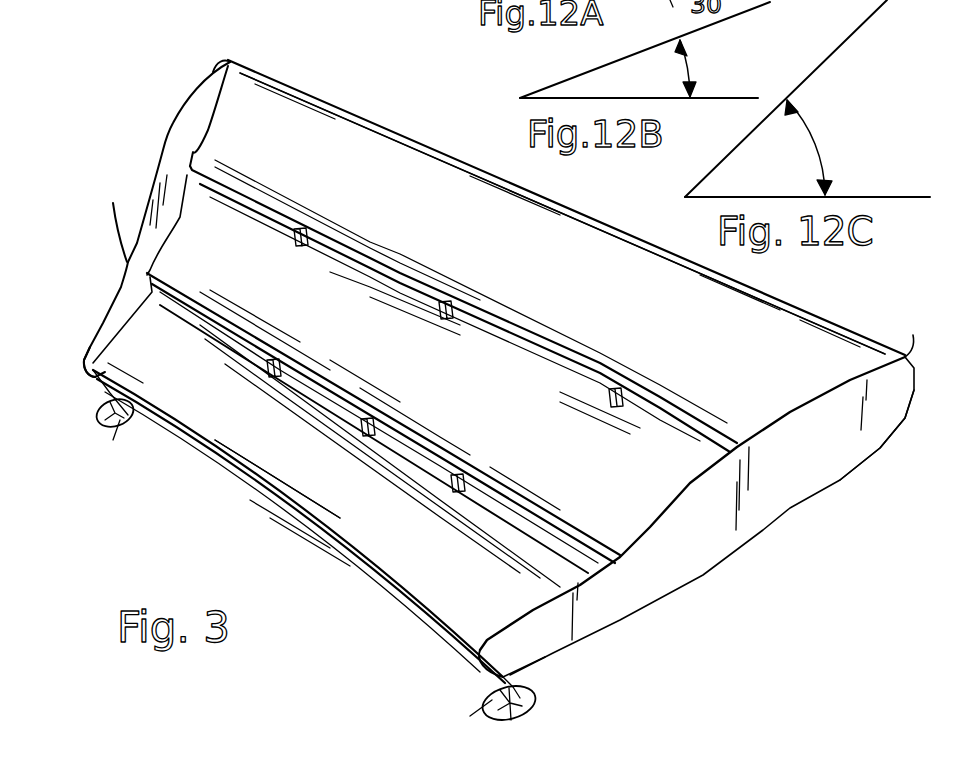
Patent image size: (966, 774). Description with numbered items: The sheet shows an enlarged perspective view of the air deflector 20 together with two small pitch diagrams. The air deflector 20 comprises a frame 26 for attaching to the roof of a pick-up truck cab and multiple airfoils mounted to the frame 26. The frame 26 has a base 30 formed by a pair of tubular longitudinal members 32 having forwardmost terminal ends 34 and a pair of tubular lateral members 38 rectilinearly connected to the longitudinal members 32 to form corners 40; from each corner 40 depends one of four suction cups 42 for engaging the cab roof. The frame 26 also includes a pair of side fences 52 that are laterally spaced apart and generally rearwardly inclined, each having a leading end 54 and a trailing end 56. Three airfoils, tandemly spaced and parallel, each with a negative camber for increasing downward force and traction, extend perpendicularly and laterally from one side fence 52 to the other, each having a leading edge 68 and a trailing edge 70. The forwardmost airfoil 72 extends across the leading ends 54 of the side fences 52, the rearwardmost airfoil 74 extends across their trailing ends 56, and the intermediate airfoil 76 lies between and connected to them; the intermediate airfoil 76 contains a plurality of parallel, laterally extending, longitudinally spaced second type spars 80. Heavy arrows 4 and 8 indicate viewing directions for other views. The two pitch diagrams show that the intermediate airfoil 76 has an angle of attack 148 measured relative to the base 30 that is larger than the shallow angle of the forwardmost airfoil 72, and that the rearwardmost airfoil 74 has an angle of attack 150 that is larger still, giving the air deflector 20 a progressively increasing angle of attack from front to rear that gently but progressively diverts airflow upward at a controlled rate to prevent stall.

In FIG. 3, the view direction arrow 4 is at (435, 100).
In FIG. 3, the view direction arrow 8 is at (747, 573).
In FIG. 3, the air deflector 20 is at (136, 126).
In FIG. 3, the frame 26 is at (841, 483).
In FIG. 3, the base 30 is at (442, 650).
In FIG. 12B, the base 30 is at (717, 97).
In FIG. 12C, the base 30 is at (873, 193).
In FIG. 3, the longitudinal members 32 is at (533, 667).
In FIG. 3, the forwardmost terminal ends 34 is at (110, 400).
In FIG. 3, the lateral members 38 is at (297, 530).
In FIG. 3, the corners 40 is at (113, 395).
In FIG. 3, the suction cups 42 is at (122, 427).
In FIG. 3, the side fences 52 is at (141, 293).
In FIG. 3, the leading ends 54 is at (88, 347).
In FIG. 3, the trailing ends 56 is at (215, 82).
In FIG. 3, the leading edge 68 is at (400, 290).
In FIG. 3, the trailing edge 70 is at (597, 221).
In FIG. 3, the forwardmost airfoil 72 is at (232, 483).
In FIG. 3, the rearwardmost airfoil 74 is at (789, 297).
In FIG. 12C, the rearwardmost airfoil 74 is at (830, 52).
In FIG. 3, the intermediate airfoil 76 is at (562, 358).
In FIG. 12B, the intermediate airfoil 76 is at (656, 43).
In FIG. 3, the second type spars 80 is at (264, 369).
In FIG. 12B, the angle of attack 148 is at (660, 55).
In FIG. 12C, the angle of attack 150 is at (763, 127).